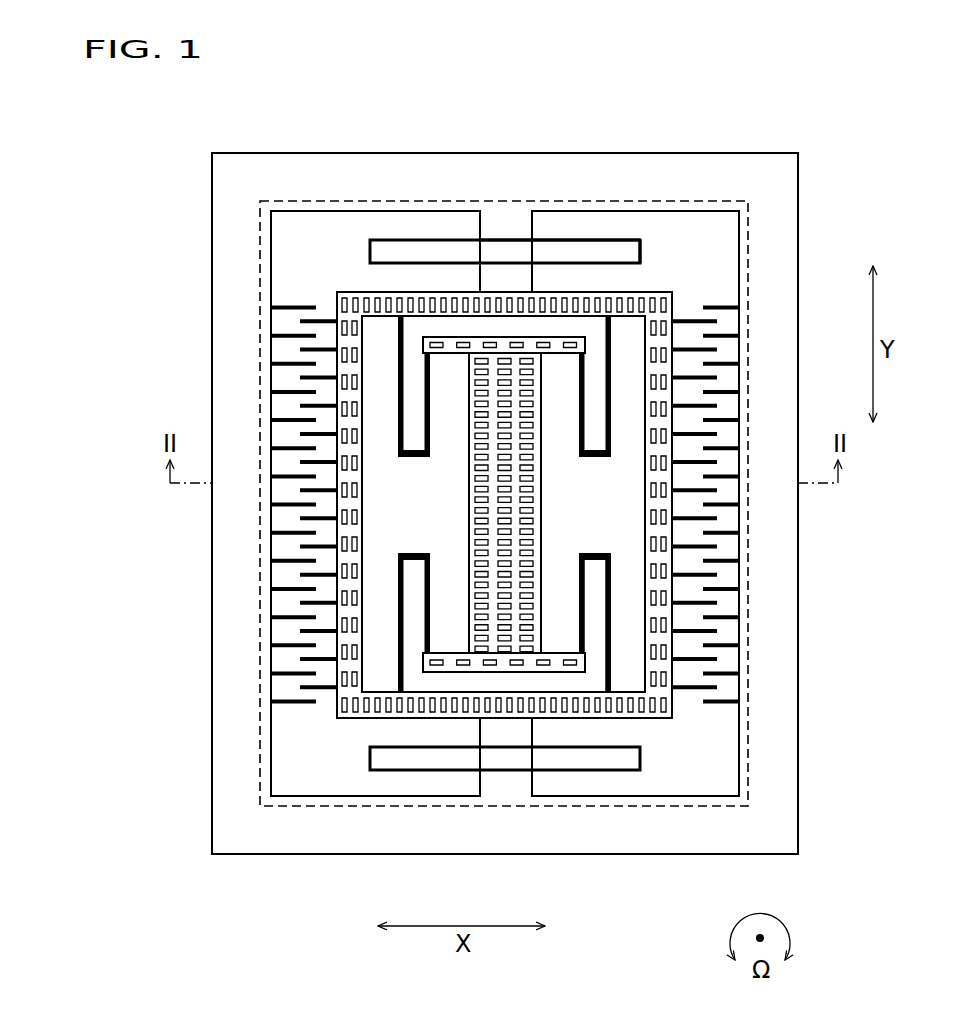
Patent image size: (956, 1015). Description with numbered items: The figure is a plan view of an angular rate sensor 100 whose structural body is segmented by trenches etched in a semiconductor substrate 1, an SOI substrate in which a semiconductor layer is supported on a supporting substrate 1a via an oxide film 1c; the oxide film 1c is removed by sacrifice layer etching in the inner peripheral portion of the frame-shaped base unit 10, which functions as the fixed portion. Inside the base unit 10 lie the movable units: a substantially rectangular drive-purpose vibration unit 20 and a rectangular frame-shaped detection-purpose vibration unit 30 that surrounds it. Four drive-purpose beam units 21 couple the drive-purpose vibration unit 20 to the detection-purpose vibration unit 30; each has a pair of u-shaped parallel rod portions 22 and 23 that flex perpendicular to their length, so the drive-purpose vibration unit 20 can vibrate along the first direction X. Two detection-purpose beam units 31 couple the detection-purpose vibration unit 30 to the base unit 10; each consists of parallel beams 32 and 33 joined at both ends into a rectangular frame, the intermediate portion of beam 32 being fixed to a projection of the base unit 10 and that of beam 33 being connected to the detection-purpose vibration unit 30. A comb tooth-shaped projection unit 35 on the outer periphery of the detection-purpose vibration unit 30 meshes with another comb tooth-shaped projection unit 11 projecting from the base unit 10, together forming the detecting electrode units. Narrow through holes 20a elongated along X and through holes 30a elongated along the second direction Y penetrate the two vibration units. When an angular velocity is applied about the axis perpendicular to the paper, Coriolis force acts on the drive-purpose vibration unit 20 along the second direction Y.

The angular rate sensor 100 is at (430, 128).
The semiconductor substrate 1 is at (209, 207).
The supporting substrate 1a is at (220, 165).
The oxide film 1c is at (285, 806).
The base unit 10 is at (220, 418).
The comb tooth-shaped projection unit 11 is at (288, 306).
The drive-purpose vibration unit 20 is at (470, 515).
The through holes 20a is at (530, 468).
The drive-purpose beam units 21 is at (394, 393).
The parallel rod portion 22 is at (585, 588).
The parallel rod portion 23 is at (613, 640).
The detection-purpose vibration unit 30 is at (350, 428).
The through holes 30a is at (642, 302).
The detection-purpose beam units 31 is at (544, 237).
The beam 32 is at (608, 260).
The beam 33 is at (580, 239).
The comb tooth-shaped projection unit 35 is at (325, 318).